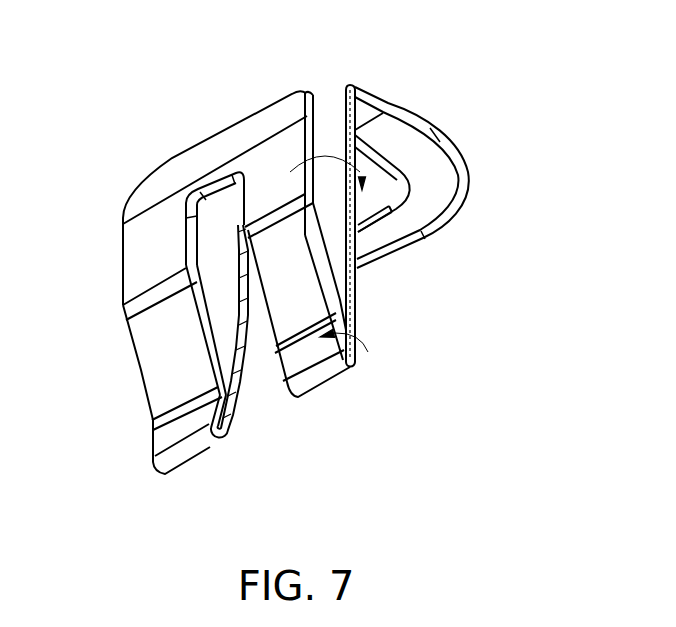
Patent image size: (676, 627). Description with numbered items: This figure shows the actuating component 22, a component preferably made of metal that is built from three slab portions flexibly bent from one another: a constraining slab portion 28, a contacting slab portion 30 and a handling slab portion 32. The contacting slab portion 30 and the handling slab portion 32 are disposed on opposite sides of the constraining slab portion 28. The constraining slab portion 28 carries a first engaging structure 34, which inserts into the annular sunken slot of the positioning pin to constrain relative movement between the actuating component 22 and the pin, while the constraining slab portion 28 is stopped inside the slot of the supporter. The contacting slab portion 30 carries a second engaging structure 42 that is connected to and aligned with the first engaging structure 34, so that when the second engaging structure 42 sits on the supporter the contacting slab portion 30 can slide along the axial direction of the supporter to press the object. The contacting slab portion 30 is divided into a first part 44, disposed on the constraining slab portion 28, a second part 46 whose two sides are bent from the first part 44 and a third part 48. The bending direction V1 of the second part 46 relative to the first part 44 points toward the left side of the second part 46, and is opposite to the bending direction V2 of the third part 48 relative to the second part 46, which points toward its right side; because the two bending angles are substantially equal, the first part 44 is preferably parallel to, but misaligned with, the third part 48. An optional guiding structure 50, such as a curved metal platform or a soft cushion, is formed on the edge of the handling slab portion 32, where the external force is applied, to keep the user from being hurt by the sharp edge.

The actuating component 22 is at (544, 109).
The constraining slab portion 28 is at (359, 295).
The contacting slab portion 30 is at (57, 268).
The handling slab portion 32 is at (365, 110).
The first engaging structure 34 is at (251, 396).
The second engaging structure 42 is at (206, 221).
The first part 44 is at (157, 437).
The second part 46 is at (143, 368).
The third part 48 is at (133, 265).
The guiding structure 50 is at (443, 178).
The bending direction V1 is at (359, 343).
The bending direction V2 is at (328, 155).